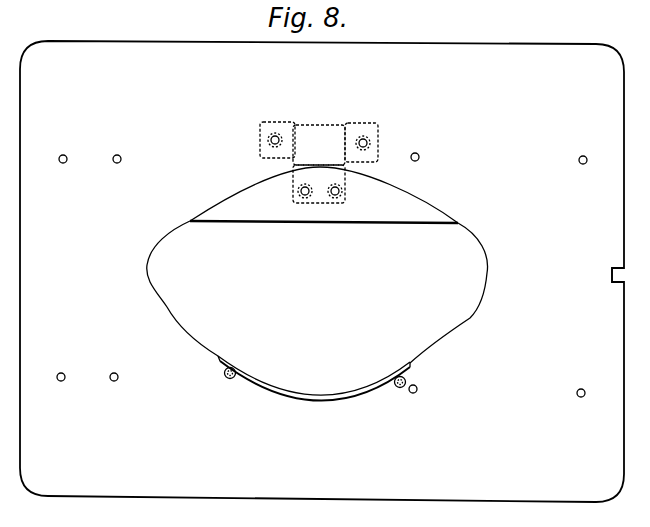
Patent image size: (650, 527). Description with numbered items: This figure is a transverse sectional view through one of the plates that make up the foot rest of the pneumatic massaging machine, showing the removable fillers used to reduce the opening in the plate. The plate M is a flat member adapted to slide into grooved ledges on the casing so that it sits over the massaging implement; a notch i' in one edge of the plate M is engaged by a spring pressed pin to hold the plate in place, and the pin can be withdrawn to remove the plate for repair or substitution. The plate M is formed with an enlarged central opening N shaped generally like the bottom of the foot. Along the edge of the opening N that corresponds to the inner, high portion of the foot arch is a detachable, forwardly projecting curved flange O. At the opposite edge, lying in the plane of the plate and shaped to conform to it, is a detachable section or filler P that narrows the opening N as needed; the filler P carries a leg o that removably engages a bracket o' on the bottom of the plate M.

The plate M is at (322, 271).
The central opening N is at (317, 265).
The detachable section or filler P is at (384, 217).
The curved flange O is at (322, 398).
The leg o is at (335, 149).
The bracket o' is at (284, 127).
The notch i' is at (605, 278).